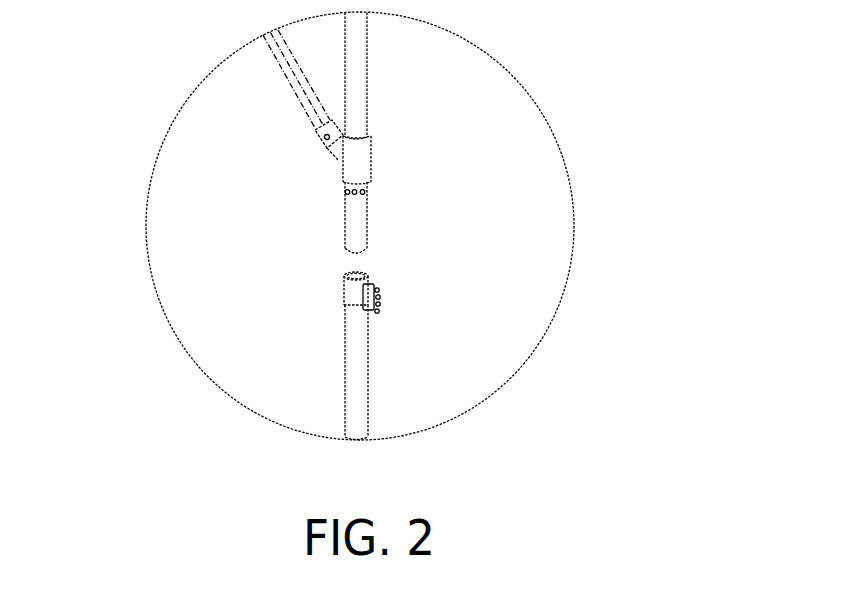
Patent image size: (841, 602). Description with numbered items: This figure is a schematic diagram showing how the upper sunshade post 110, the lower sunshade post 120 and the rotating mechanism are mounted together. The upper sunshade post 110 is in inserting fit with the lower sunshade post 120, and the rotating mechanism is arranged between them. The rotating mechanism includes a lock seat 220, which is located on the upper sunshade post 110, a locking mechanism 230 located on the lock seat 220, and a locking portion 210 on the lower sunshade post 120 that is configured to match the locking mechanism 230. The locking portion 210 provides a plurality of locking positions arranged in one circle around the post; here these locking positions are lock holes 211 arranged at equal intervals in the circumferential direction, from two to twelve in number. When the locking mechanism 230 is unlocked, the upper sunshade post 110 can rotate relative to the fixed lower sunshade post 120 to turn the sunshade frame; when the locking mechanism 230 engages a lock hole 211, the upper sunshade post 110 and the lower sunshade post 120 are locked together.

The upper sunshade post 110 is at (357, 92).
The lower sunshade post 120 is at (355, 360).
The locking portion 210 is at (345, 192).
The lock holes 211 is at (367, 193).
The lock seat 220 is at (343, 301).
The locking mechanism 230 is at (380, 300).